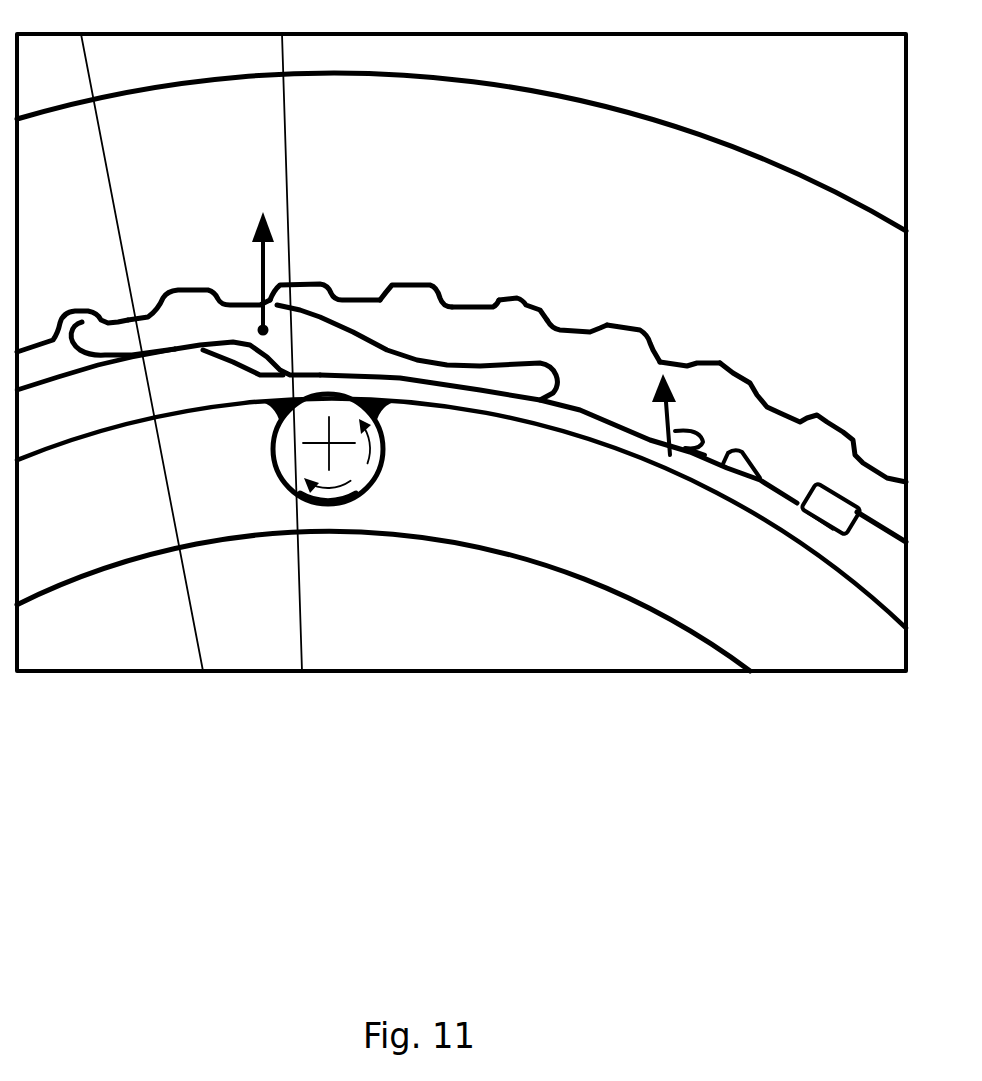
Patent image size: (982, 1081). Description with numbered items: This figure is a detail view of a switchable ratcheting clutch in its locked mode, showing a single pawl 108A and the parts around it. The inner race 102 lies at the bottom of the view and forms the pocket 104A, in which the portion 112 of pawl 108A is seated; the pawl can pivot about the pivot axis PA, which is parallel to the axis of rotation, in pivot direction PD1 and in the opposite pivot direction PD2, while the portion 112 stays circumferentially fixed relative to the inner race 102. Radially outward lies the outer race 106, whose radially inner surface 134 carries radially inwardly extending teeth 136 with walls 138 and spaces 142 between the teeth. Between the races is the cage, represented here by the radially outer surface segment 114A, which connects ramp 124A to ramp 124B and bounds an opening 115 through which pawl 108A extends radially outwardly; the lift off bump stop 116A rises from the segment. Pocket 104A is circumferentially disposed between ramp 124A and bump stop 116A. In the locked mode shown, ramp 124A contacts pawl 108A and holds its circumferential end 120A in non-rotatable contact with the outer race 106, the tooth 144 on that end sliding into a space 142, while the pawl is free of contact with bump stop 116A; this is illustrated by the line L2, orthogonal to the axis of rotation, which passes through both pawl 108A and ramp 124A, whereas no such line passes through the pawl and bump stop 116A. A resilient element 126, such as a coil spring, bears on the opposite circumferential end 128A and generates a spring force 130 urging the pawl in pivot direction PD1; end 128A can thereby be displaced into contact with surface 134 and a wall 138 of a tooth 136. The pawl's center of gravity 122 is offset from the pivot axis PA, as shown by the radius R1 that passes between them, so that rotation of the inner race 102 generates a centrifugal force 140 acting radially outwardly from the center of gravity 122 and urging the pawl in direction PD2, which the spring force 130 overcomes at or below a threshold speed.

The inner race 102 is at (90, 578).
The pocket 104A is at (343, 508).
The outer race 106 is at (723, 142).
The pawl 108A is at (354, 329).
The portion 112 is at (283, 455).
The radially outer surface segment 114A is at (637, 400).
The opening 115 is at (593, 410).
The lift off bump stop 116A is at (743, 453).
The circumferential end 120A is at (93, 330).
The center of gravity 122 is at (260, 377).
The ramp 124A is at (62, 417).
The ramp 124B is at (833, 507).
The resilient element 126 is at (702, 462).
The circumferential end 128A is at (530, 380).
The spring force 130 is at (680, 410).
The radially inner surface 134 is at (411, 283).
The tooth 136 is at (463, 303).
The wall 138 is at (566, 398).
The centrifugal force 140 is at (260, 290).
The space 142 is at (520, 310).
The tooth 144 is at (187, 300).
The line L2 is at (117, 230).
The radius R1 is at (287, 258).
The pivot axis PA is at (335, 448).
The pivot direction PD1 is at (386, 466).
The pivot direction PD2 is at (322, 492).